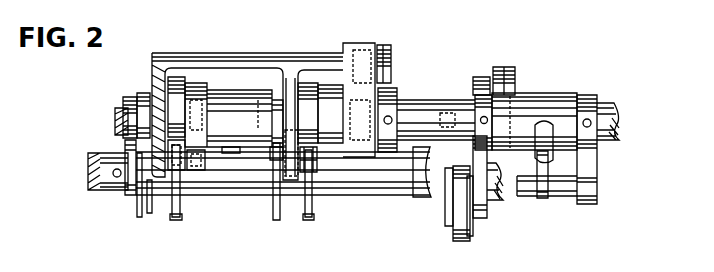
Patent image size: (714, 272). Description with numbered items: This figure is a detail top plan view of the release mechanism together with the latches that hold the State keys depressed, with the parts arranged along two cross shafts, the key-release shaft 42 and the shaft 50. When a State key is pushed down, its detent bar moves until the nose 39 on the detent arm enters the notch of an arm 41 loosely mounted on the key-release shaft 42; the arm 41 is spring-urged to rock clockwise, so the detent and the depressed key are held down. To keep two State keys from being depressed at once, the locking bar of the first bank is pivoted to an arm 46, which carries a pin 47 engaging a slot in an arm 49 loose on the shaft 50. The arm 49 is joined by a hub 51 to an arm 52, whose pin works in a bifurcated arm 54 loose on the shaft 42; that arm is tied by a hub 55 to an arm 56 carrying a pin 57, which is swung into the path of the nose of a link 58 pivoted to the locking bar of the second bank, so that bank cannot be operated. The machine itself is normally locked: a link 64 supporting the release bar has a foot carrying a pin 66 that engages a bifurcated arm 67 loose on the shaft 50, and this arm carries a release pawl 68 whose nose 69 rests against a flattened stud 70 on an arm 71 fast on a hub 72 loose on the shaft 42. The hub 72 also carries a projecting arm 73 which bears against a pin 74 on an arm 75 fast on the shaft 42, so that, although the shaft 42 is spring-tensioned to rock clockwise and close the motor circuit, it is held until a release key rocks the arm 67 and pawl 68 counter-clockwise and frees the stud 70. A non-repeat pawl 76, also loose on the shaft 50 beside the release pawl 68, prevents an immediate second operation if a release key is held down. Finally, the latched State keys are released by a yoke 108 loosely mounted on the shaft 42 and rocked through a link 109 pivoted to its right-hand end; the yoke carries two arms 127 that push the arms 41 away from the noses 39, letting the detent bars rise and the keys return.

The yoke 108 is at (262, 60).
The link 109 is at (390, 58).
The arms 127 is at (158, 118).
The hub 55 is at (218, 100).
The pin 57 is at (290, 130).
The arm 49 is at (130, 142).
The pin 47 is at (130, 177).
The shaft 50 is at (353, 185).
The arm 46 is at (137, 215).
The hub 51 is at (150, 213).
The arm 41 is at (181, 205).
The nose 39 is at (172, 222).
The arm 52 is at (196, 160).
The bifurcated arm 54 is at (231, 153).
The arm 56 is at (277, 160).
The link 58 is at (276, 220).
The pin 66 is at (428, 202).
The link 64 is at (446, 218).
The bifurcated arm 67 is at (463, 241).
The release pawl 68 is at (471, 236).
The non-repeat pawl 76 is at (486, 204).
The pin 74 is at (567, 194).
The arm 75 is at (543, 159).
The projecting arm 73 is at (593, 164).
The key-release shaft 42 is at (613, 110).
The hub 72 is at (540, 93).
The arm 71 is at (507, 68).
The flattened stud 70 is at (480, 76).
The nose 69 is at (477, 113).